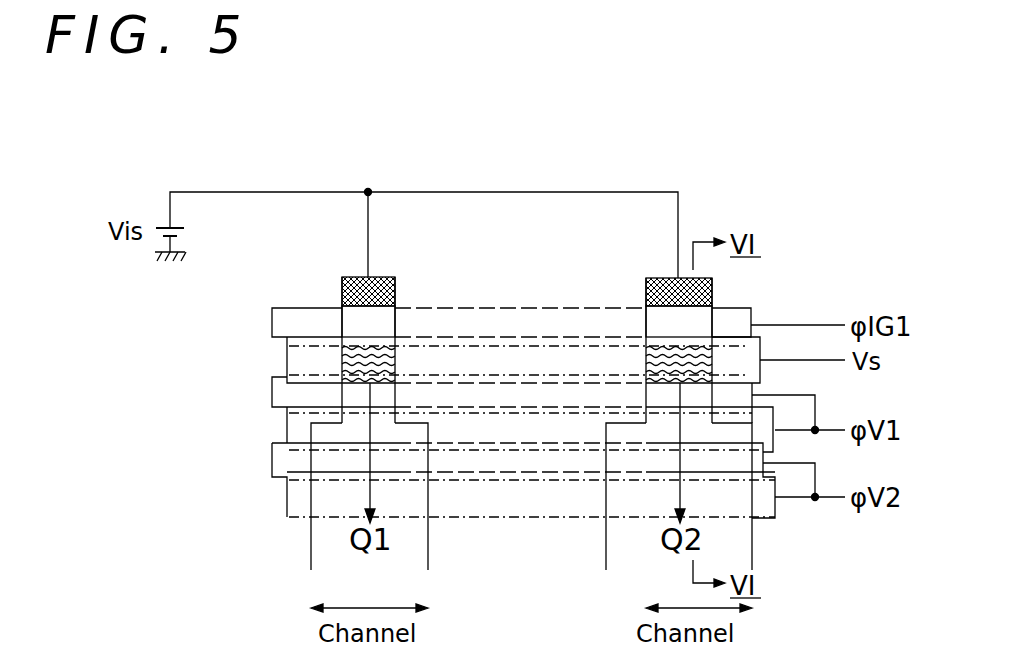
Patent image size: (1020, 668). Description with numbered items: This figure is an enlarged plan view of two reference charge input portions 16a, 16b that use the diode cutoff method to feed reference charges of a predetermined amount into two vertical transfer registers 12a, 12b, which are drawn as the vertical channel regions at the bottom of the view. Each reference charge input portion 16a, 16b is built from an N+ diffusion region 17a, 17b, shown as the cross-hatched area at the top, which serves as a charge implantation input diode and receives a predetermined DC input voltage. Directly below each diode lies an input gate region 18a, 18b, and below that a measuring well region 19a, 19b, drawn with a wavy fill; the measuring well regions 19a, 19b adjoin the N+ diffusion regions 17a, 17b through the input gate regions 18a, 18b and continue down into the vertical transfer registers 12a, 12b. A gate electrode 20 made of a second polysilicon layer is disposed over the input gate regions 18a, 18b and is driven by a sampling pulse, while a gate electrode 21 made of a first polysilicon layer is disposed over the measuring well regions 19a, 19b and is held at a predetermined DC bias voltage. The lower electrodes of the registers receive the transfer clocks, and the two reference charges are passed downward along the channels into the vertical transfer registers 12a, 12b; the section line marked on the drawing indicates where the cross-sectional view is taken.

The vertical transfer register 12a is at (323, 538).
The vertical transfer register 12b is at (740, 538).
The reference charge input portion 16a is at (422, 255).
The reference charge input portion 16b is at (872, 234).
The N+ diffusion region 17a is at (398, 290).
The N+ diffusion region 17b is at (714, 290).
The input gate region 18a is at (352, 318).
The input gate region 18b is at (662, 318).
The measuring well region 19a is at (342, 352).
The measuring well region 19b is at (712, 367).
The gate electrode 20 is at (270, 326).
The gate electrode 21 is at (270, 378).